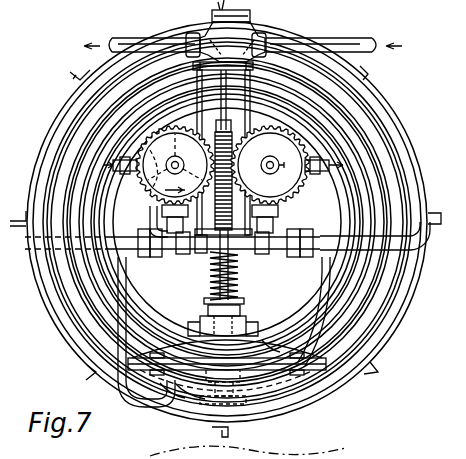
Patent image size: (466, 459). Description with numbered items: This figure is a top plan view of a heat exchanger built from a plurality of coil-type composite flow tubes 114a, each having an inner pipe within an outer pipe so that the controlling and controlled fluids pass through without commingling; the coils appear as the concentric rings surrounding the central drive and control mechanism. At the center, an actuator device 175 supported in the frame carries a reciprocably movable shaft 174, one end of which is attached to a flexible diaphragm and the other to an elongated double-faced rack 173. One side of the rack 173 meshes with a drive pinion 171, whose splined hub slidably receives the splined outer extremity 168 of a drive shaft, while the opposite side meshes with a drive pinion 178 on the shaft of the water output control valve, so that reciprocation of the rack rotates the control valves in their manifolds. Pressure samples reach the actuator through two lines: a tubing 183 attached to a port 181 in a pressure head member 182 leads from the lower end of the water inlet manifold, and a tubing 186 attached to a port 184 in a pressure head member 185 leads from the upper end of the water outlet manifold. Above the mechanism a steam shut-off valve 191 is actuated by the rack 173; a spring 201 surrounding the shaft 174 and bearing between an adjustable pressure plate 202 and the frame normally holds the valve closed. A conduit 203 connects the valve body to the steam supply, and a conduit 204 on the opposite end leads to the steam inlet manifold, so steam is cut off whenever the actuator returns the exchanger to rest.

The coil-type composite flow tube 114a is at (412, 168).
The steam shut-off valve 191 is at (250, 26).
The conduit 204 is at (118, 40).
The conduit 203 is at (376, 40).
The movable shaft 174 is at (214, 290).
The outer extremity of drive shaft 168 is at (150, 202).
The drive pinion 178 is at (289, 146).
The elongated double-faced rack 173 is at (251, 189).
The drive pinion 171 is at (165, 212).
The tubing 183 is at (128, 286).
The tubing 186 is at (318, 290).
The spring 201 is at (240, 278).
The adjustable pressure plate 202 is at (243, 301).
The pressure head member 185 is at (192, 330).
The port 184 is at (275, 348).
The actuator device 175 is at (258, 349).
The port 181 is at (164, 398).
The pressure head member 182 is at (190, 400).